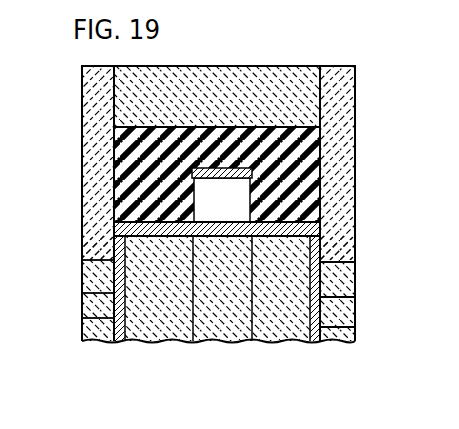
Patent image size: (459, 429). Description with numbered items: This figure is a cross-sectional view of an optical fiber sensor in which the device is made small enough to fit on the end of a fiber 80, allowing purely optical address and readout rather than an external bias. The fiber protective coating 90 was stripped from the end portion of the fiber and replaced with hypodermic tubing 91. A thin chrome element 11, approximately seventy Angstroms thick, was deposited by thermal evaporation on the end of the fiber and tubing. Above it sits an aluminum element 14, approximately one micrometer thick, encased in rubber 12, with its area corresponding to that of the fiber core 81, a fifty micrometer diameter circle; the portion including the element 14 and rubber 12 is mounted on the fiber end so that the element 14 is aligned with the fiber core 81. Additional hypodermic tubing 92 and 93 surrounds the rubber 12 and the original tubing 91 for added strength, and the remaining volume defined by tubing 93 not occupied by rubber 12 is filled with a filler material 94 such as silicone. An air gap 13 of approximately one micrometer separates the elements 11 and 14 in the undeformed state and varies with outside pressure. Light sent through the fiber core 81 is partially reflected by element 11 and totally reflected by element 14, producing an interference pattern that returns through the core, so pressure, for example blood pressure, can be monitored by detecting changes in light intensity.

The filler material 94 is at (322, 100).
The rubber 12 is at (318, 153).
The element 14 is at (252, 172).
The air gap 13 is at (243, 202).
The element 11 is at (318, 229).
The hypodermic tubing 93 is at (90, 250).
The hypodermic tubing 92 is at (97, 272).
The hypodermic tubing 91 is at (105, 294).
The fiber protective coating 90 is at (108, 316).
The fiber core 81 is at (226, 343).
The fiber 80 is at (272, 343).